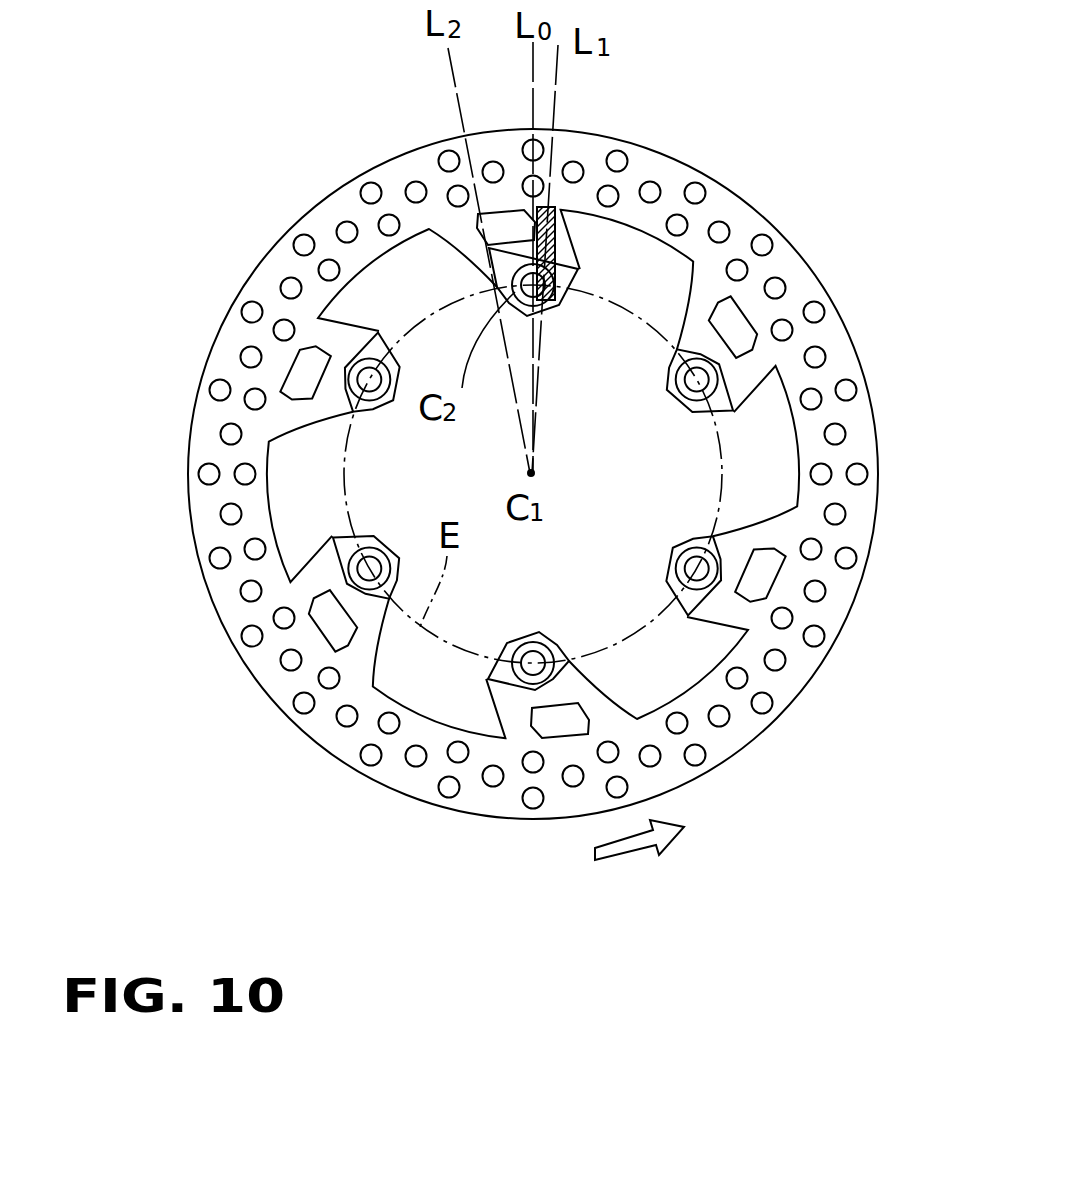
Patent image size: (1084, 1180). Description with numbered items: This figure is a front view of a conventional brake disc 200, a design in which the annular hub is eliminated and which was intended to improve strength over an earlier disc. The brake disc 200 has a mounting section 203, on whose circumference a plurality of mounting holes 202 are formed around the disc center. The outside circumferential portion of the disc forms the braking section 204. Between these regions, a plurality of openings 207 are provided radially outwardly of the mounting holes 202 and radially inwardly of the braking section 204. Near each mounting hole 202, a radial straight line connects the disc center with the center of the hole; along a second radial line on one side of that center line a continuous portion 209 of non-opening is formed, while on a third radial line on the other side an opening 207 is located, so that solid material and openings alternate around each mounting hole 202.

The brake disc 200 is at (740, 118).
The mounting holes 202 is at (683, 392).
The mounting section 203 is at (673, 362).
The braking section 204 is at (798, 262).
The openings 207 is at (507, 222).
The continuous portion of non-opening 209 is at (552, 222).